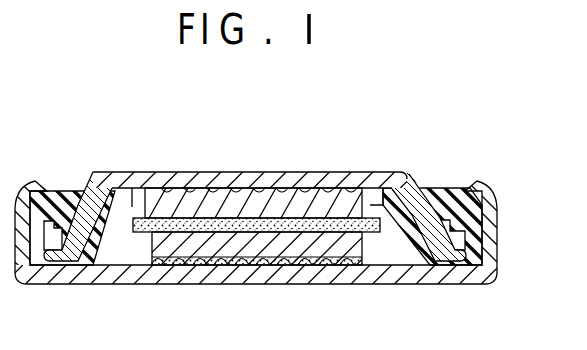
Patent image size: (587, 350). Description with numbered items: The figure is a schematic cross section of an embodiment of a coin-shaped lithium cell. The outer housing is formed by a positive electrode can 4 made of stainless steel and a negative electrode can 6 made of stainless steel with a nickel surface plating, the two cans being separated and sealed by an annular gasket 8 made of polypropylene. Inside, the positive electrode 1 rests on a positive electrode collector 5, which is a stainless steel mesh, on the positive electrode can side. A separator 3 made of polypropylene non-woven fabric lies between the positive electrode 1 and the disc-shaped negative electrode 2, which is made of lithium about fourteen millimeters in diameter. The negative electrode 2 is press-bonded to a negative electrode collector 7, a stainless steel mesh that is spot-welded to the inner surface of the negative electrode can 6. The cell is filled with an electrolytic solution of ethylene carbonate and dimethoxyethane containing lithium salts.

The positive electrode 1 is at (180, 245).
The negative electrode 2 is at (228, 186).
The separator 3 is at (281, 217).
The positive electrode can 4 is at (228, 270).
The positive electrode collector 5 is at (326, 260).
The negative electrode can 6 is at (337, 176).
The negative electrode collector 7 is at (180, 183).
The gasket 8 is at (437, 206).